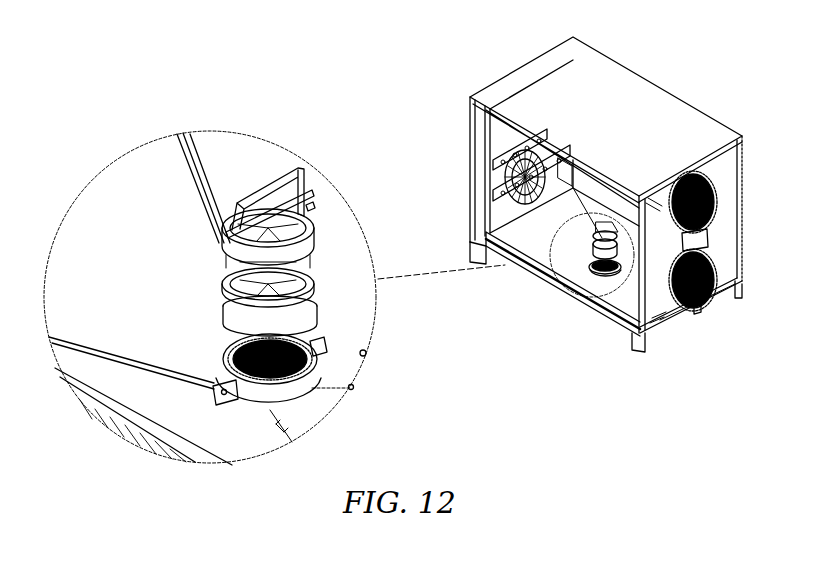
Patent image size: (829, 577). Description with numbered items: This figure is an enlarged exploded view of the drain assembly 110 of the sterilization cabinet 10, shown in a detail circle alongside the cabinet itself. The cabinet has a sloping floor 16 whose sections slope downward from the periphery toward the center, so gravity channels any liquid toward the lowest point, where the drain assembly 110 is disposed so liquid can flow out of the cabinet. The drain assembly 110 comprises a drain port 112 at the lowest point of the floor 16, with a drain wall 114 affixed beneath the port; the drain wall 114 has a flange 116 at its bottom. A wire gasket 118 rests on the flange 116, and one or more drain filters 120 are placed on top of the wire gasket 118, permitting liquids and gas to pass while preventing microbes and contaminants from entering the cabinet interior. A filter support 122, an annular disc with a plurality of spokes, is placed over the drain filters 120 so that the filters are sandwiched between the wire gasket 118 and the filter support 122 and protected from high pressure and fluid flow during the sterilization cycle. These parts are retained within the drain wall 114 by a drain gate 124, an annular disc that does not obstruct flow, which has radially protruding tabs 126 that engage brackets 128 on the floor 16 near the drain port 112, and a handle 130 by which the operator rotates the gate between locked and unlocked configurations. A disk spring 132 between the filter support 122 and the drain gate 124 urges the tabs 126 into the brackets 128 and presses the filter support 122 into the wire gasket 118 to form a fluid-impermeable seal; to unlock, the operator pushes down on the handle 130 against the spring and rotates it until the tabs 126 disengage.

The sterilization cabinet 10 is at (699, 74).
The floor 16 is at (160, 403).
The drain assembly 110 is at (351, 250).
The drain port 112 is at (302, 405).
The drain wall 114 is at (311, 384).
The flange 116 is at (308, 390).
The wire gasket 118 is at (231, 355).
The drain filters 120 is at (224, 300).
The filter support 122 is at (317, 286).
The drain gate 124 is at (312, 213).
The tabs 126 is at (310, 206).
The brackets 128 is at (222, 405).
The handle 130 is at (277, 182).
The disk spring 132 is at (222, 243).